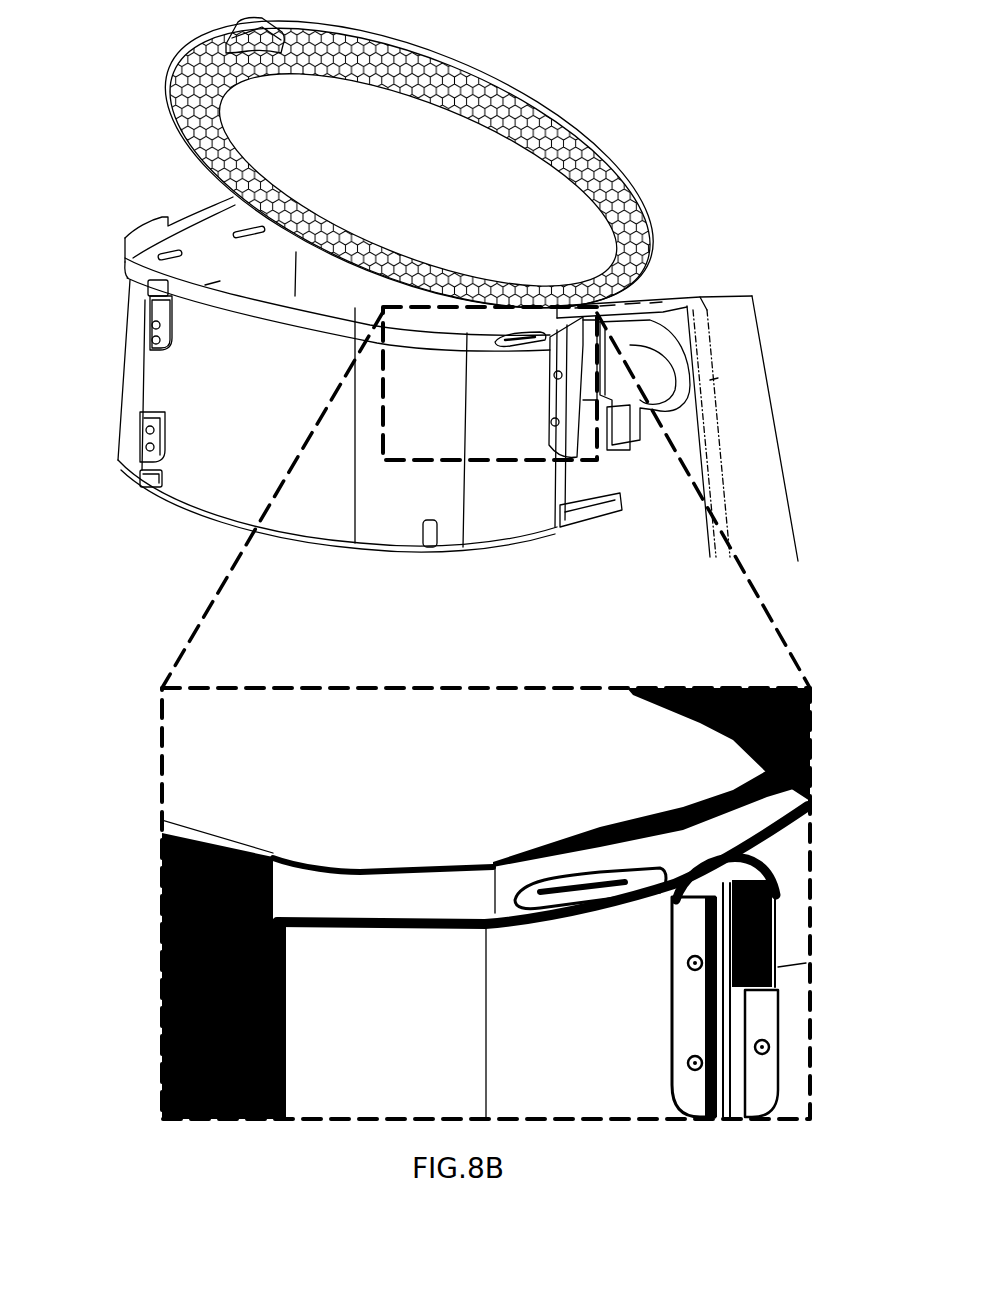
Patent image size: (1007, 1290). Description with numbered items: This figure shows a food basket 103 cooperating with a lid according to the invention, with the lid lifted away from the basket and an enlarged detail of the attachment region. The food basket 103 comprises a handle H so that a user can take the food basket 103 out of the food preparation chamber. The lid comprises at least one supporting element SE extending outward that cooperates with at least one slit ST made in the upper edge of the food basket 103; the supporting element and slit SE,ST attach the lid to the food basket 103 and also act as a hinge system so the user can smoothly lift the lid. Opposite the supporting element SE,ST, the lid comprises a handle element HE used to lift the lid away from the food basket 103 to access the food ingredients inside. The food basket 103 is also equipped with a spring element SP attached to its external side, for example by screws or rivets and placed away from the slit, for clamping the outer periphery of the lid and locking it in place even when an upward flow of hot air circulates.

The handle element HE is at (228, 45).
The supporting element and slit SE,ST is at (530, 338).
The spring element SP is at (157, 326).
The food basket 103 is at (121, 414).
The handle H is at (760, 352).